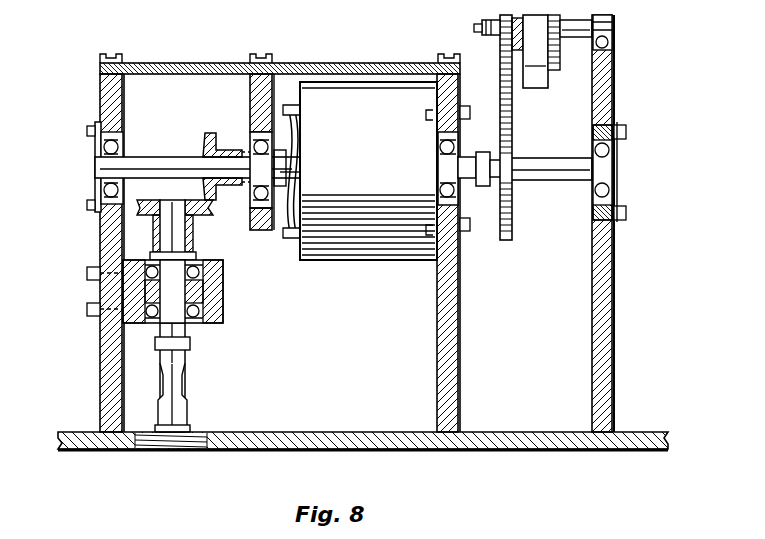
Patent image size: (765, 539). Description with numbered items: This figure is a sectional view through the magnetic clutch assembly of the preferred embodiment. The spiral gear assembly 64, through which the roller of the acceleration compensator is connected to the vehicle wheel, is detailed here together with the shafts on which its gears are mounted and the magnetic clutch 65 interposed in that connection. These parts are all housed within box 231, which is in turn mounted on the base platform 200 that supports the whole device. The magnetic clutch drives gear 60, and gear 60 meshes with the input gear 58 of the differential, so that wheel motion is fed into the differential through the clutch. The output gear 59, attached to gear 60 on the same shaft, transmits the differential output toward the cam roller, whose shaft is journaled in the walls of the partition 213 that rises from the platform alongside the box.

The input gear 58 is at (500, 50).
The output gear 59 is at (560, 58).
The gear 60 is at (512, 225).
The spiral gear assembly 64 is at (190, 212).
The magnetic clutch 65 is at (350, 98).
The base platform 200 is at (500, 454).
The partition 213 is at (613, 310).
The box 231 is at (100, 355).